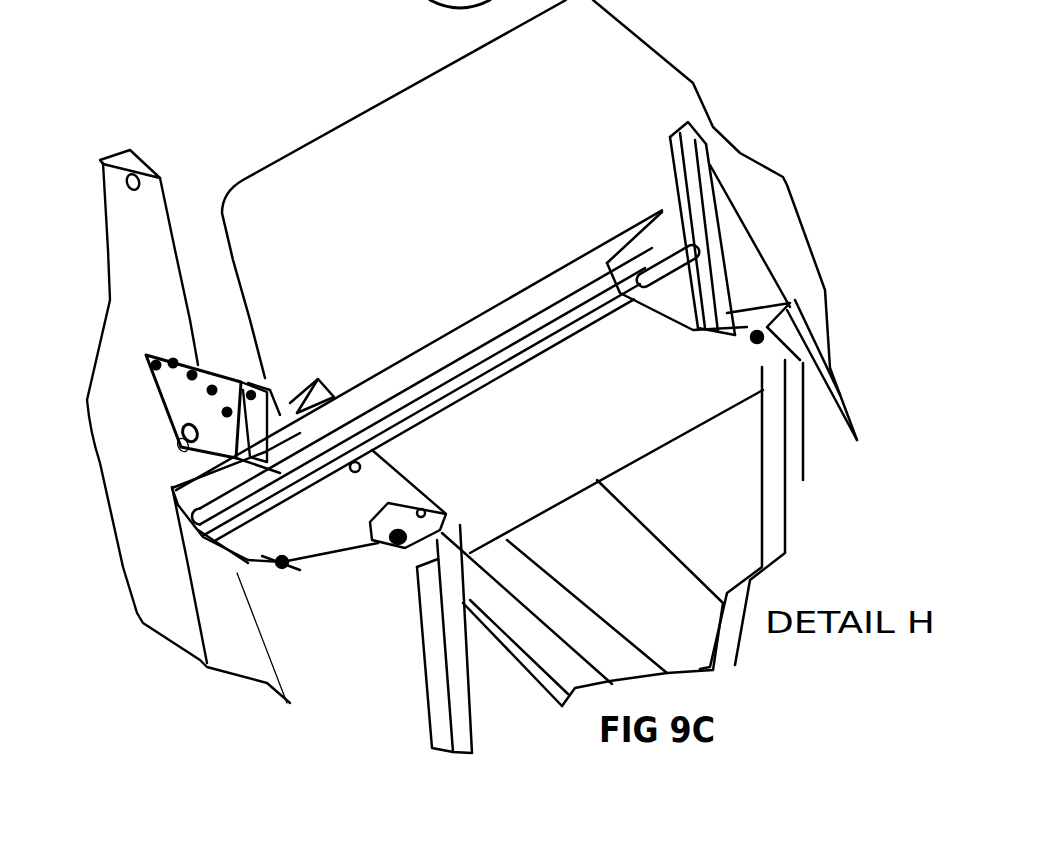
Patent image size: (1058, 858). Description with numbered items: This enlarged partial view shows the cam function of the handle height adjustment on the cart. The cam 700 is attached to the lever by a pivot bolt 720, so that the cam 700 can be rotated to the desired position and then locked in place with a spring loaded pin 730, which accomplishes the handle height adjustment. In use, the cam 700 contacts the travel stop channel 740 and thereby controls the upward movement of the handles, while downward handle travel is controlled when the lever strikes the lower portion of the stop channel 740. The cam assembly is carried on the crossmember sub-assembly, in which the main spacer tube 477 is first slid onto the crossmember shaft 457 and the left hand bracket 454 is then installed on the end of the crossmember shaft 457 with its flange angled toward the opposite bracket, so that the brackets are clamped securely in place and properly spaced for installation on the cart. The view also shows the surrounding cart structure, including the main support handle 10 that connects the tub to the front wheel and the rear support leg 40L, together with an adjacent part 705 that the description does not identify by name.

The side body panel 705 is at (103, 160).
The cam 700 is at (213, 365).
The spring loaded pin 730 is at (165, 352).
The travel stop channel 740 is at (686, 125).
The crossmember shaft 457 is at (620, 235).
The main spacer tube 477 is at (497, 385).
The left hand bracket 454 is at (339, 563).
The rear support leg 40L is at (422, 676).
The main support handle 10 is at (525, 610).
The pivot bolt 720 is at (182, 452).